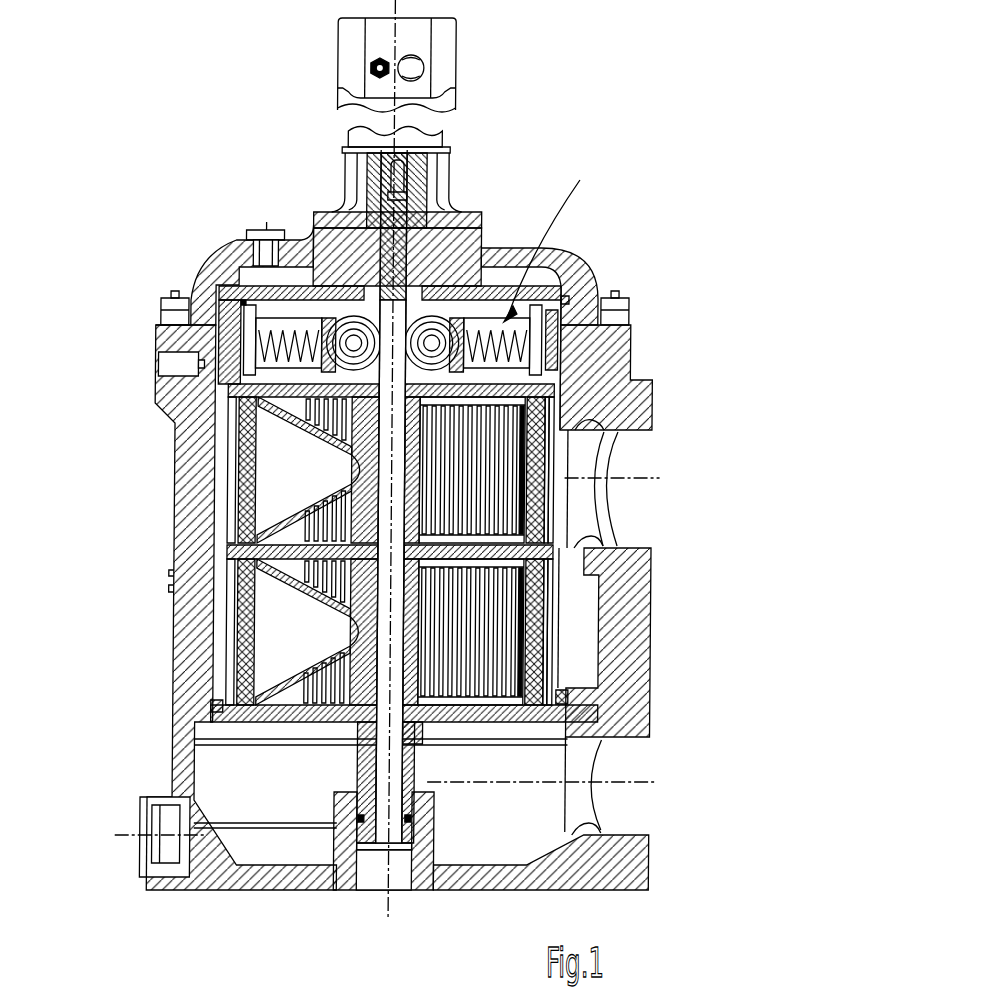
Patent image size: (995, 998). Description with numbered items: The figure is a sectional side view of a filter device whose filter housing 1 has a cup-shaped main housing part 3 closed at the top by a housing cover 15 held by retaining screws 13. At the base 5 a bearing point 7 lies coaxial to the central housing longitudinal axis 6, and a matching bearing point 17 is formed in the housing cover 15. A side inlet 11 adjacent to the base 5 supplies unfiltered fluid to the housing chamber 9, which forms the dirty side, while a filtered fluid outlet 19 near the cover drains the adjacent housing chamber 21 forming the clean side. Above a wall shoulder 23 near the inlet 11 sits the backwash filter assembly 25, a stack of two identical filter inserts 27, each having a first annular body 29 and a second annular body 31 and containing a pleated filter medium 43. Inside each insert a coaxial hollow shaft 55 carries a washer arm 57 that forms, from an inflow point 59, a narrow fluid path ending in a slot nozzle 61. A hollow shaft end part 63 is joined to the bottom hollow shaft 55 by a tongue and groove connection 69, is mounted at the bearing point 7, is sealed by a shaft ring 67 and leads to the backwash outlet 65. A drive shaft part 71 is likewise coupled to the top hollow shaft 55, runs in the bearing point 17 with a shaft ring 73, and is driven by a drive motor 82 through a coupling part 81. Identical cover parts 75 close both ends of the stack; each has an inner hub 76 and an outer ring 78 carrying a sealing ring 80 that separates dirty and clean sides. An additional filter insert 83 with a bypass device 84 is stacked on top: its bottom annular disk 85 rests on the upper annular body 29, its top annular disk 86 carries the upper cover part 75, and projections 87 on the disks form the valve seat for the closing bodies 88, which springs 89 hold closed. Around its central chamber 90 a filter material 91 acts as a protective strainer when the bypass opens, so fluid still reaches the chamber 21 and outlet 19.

The filter housing 1 is at (411, 489).
The main housing part 3 is at (193, 628).
The base 5 is at (260, 876).
The central housing longitudinal axis 6 is at (385, 903).
The bearing point 7 is at (413, 832).
The housing chamber 9 is at (240, 791).
The side inlet 11 is at (613, 828).
The retaining screws 13 is at (175, 296).
The housing cover 15 is at (568, 258).
The bearing point 17 is at (318, 214).
The filtered fluid outlet 19 is at (623, 507).
The housing chamber 21 is at (568, 605).
The wall shoulder 23 is at (597, 720).
The backwash filter assembly 25 is at (212, 510).
The filter inserts 27 is at (227, 418).
The first annular body 29 is at (227, 395).
The second annular body 31 is at (227, 542).
The filter medium 43 is at (536, 632).
The hollow shaft 55 is at (420, 472).
The washer arm 57 is at (327, 512).
The inflow point 59 is at (370, 477).
The slot nozzle 61 is at (240, 432).
The hollow shaft end part 63 is at (412, 768).
The backwash outlet 65 is at (407, 887).
The shaft ring 67 is at (440, 815).
The tongue and groove connection 69 is at (403, 390).
The drive shaft part 71 is at (426, 208).
The shaft ring 73 is at (481, 224).
The cover part 75 is at (248, 298).
The inner hub 76 is at (435, 742).
The outer ring 78 is at (213, 282).
The sealing ring 80 is at (572, 300).
The coupling part 81 is at (400, 172).
The drive motor 82 is at (437, 62).
The filter insert 83 is at (245, 370).
The bypass device 84 is at (553, 238).
The bottom annular disk 85 is at (575, 396).
The top annular disk 86 is at (530, 305).
The projections 87 is at (300, 325).
The closing bodies 88 is at (291, 299).
The springs 89 is at (590, 272).
The central chamber 90 is at (335, 388).
The filter material 91 is at (557, 335).